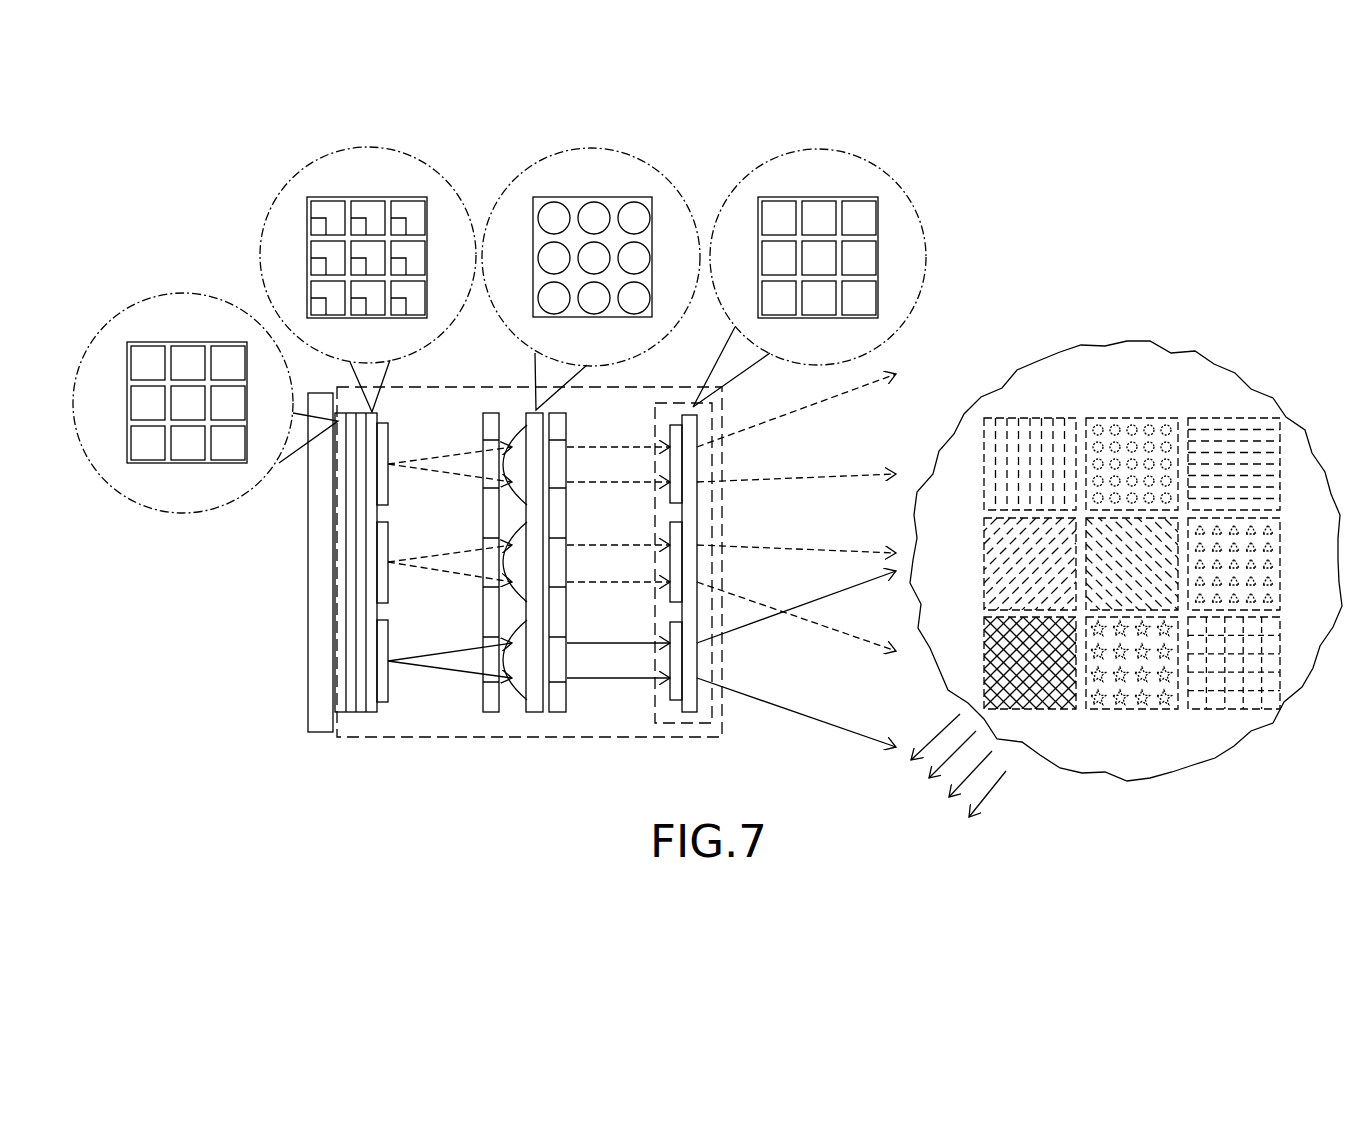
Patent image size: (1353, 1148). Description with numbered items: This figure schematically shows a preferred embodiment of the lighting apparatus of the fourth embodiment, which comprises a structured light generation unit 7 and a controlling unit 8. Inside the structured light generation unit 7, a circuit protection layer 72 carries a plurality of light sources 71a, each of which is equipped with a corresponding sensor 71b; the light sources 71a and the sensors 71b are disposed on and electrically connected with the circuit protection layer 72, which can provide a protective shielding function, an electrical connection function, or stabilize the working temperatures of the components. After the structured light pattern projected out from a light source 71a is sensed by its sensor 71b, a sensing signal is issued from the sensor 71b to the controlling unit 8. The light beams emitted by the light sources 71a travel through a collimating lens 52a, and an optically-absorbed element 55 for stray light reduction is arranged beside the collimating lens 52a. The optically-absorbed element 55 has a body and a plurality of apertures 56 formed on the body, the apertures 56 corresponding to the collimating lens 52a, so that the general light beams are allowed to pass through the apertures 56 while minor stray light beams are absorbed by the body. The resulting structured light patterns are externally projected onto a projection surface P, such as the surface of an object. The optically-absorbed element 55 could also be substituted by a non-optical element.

The structured light generation unit 7 is at (398, 738).
The controlling unit 8 is at (321, 587).
The circuit protection layer 72 is at (125, 442).
The light source 71a is at (330, 200).
The sensor 71b is at (317, 225).
The collimating lens 52a is at (503, 425).
The optically-absorbed element 55 is at (492, 628).
The apertures 56 is at (480, 483).
The projection surface P is at (1232, 393).